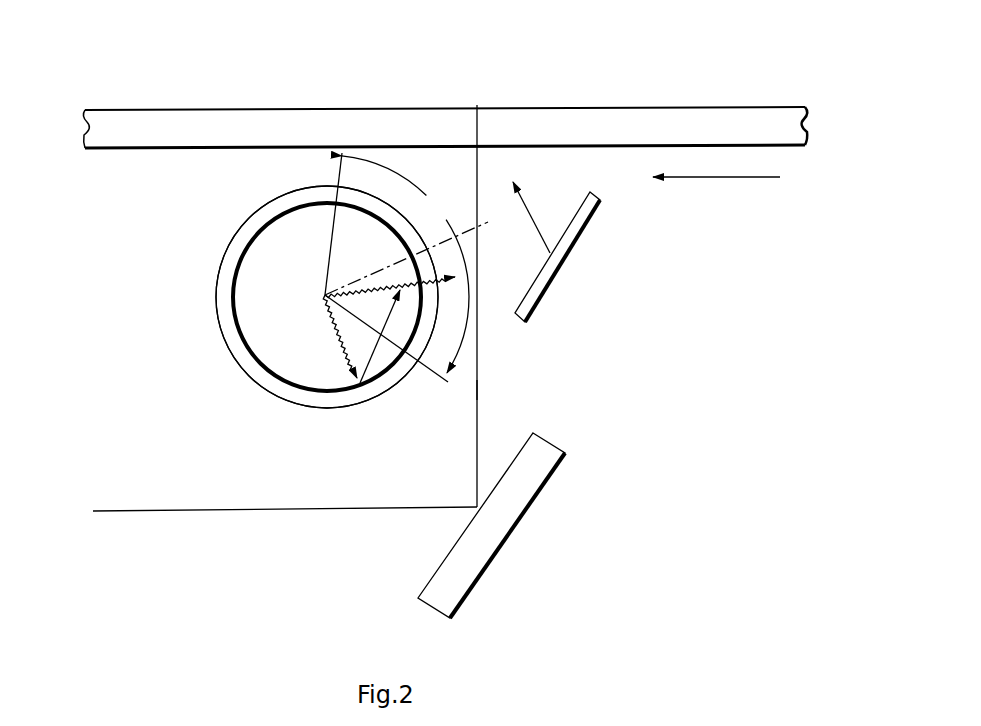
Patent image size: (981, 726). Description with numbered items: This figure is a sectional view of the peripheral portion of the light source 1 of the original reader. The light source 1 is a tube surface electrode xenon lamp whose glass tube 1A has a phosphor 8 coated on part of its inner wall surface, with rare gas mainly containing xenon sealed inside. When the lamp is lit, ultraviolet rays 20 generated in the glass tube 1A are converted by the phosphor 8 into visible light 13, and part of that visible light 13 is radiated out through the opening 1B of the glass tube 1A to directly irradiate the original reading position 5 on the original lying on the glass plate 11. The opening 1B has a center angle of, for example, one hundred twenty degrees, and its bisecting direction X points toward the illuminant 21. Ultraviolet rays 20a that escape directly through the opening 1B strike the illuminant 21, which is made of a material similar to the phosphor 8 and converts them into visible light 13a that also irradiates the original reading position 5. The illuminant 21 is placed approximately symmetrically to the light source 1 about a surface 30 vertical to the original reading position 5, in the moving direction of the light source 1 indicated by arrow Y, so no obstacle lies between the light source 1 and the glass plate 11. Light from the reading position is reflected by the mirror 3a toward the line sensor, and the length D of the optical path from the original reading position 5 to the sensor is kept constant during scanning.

The light source 1 is at (210, 217).
The glass tube 1A is at (216, 277).
The opening 1B is at (368, 227).
The original reading position 5 is at (477, 105).
The phosphor 8 is at (258, 367).
The glass plate 11 is at (711, 110).
The visible light 13 is at (378, 355).
The visible light 13a is at (535, 220).
The ultraviolet rays 20 is at (342, 348).
The ultraviolet rays 20a is at (440, 283).
The illuminant 21 is at (583, 223).
The surface 30 is at (479, 387).
The mirror 3a is at (495, 557).
The direction X is at (416, 258).
The arrow Y is at (716, 194).
The length of optical path D is at (272, 512).